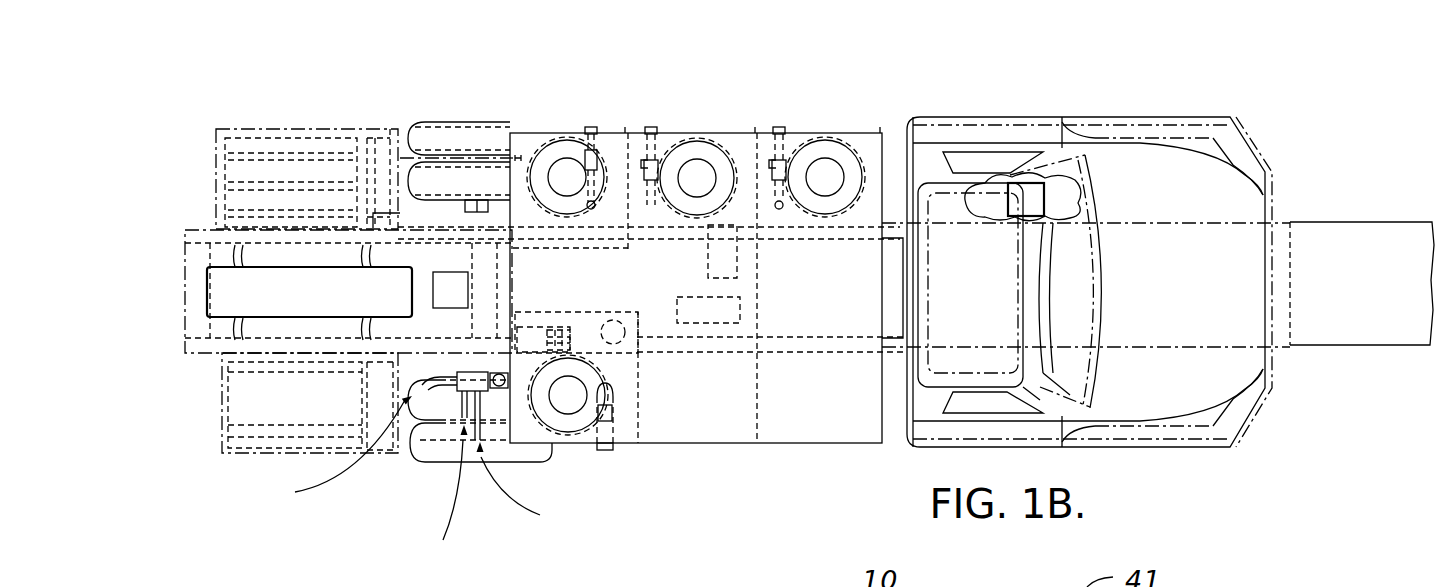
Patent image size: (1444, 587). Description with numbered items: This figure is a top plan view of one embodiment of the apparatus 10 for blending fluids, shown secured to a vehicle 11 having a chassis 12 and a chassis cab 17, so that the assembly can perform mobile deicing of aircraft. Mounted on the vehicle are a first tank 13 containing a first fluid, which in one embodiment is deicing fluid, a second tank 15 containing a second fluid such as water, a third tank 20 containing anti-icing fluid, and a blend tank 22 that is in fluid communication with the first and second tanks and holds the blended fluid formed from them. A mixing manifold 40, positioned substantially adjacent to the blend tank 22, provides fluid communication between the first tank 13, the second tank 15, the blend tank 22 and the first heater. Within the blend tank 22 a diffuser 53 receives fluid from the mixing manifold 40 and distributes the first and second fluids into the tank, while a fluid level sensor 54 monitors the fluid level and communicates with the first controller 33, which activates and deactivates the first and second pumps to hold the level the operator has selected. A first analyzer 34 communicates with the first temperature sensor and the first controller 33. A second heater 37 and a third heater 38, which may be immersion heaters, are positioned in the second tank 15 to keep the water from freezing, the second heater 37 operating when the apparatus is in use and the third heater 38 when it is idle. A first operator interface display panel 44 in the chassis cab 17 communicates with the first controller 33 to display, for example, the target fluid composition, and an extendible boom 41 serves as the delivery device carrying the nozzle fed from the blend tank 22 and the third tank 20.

The apparatus 10 is at (630, 122).
The vehicle 11 is at (310, 100).
The chassis 12 is at (277, 232).
The first tank 13 is at (862, 128).
The second tank 15 is at (727, 128).
The chassis cab 17 is at (1030, 145).
The third tank 20 is at (527, 135).
The blend tank 22 is at (655, 435).
The first controller 33 is at (295, 318).
The first analyzer 34 is at (450, 306).
The second heater 37 is at (742, 253).
The third heater 38 is at (743, 307).
The mixing manifold 40 is at (457, 383).
The extendible boom 41 is at (1368, 218).
The first operator interface display panel 44 is at (1032, 198).
The diffuser 53 is at (532, 318).
The fluid level sensor 54 is at (611, 313).